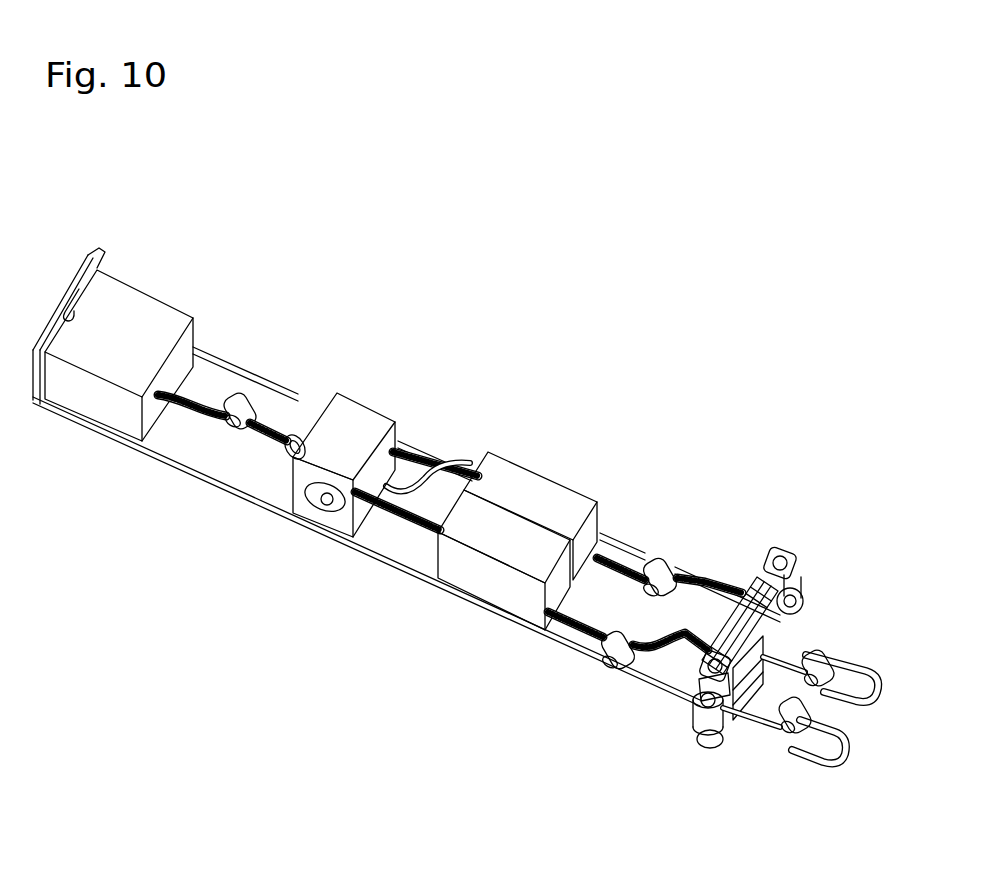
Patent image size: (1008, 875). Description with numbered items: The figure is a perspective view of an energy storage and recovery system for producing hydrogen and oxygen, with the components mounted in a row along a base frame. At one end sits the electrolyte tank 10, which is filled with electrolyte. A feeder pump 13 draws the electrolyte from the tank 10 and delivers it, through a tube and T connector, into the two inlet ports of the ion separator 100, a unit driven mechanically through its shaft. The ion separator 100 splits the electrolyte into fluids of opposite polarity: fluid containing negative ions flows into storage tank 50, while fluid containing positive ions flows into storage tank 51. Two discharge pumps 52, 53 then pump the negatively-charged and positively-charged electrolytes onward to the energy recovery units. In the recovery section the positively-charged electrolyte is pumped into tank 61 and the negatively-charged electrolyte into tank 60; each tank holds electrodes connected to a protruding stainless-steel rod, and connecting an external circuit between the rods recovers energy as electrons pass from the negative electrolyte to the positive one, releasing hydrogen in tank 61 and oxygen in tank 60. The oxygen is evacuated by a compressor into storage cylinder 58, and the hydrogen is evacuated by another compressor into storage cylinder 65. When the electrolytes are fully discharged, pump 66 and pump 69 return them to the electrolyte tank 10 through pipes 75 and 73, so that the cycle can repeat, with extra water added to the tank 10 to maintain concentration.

The tank 10 is at (129, 331).
The feeder pump 13 is at (238, 362).
The pipe 75 is at (486, 480).
The pipe 73 is at (366, 477).
The ion separator 100 is at (410, 442).
The storage tank 51 is at (554, 486).
The storage tank 50 is at (447, 579).
The discharge pump 53 is at (672, 512).
The discharge pump 52 is at (593, 670).
The storage cylinder 65 is at (821, 523).
The tank 61 is at (790, 625).
The tank 60 is at (749, 713).
The storage cylinder 58 is at (632, 757).
The pump 66 is at (845, 738).
The pump 69 is at (768, 745).